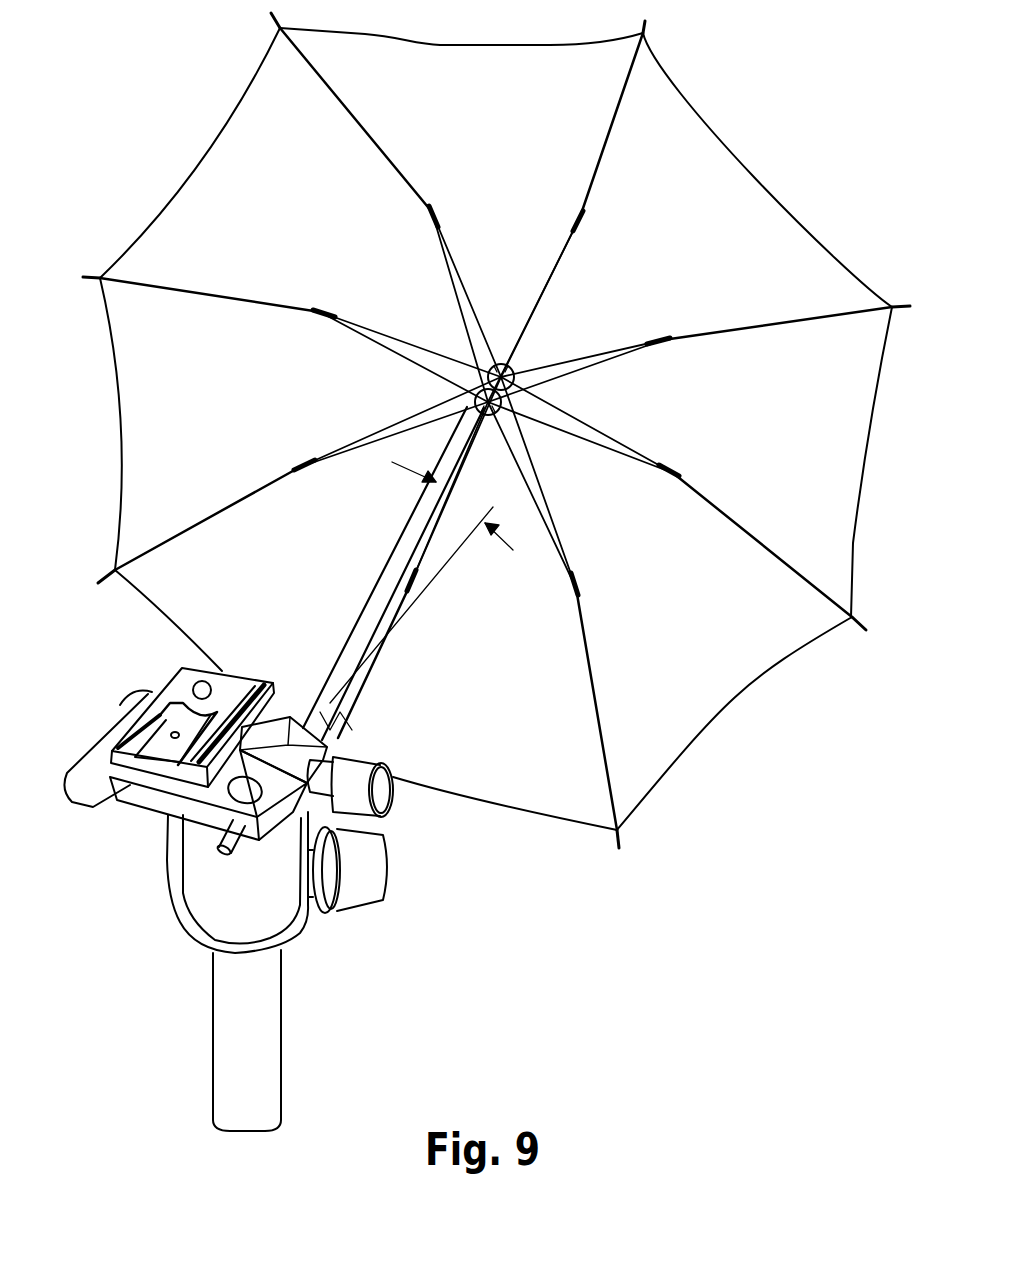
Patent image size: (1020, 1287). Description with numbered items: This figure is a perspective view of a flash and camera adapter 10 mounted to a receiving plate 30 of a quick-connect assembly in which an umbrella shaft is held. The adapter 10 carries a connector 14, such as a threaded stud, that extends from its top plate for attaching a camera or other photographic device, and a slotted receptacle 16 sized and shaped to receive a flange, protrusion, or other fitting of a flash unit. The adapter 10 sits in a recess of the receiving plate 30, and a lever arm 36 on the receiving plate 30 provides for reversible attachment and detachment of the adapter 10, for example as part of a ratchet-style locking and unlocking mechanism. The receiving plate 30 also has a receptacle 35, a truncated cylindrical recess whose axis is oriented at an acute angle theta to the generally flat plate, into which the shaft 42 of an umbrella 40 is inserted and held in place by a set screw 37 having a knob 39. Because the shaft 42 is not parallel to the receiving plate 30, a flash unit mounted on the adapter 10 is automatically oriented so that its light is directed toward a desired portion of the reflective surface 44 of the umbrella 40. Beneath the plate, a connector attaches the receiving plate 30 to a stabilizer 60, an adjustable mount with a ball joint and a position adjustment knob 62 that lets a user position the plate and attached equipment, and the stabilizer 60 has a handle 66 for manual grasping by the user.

The adapter 10 is at (160, 675).
The connector 14 is at (200, 684).
The receptacle 16 is at (160, 742).
The receiving plate 30 is at (132, 805).
The receptacle 35 is at (337, 724).
The lever arm 36 is at (75, 760).
The set screw 37 is at (327, 768).
The knob 39 is at (390, 795).
The umbrella 40 is at (496, 430).
The shaft 42 is at (398, 553).
The reflective surface 44 is at (672, 275).
The stabilizer 60 is at (167, 902).
The position adjustment knob 62 is at (373, 900).
The handle 66 is at (283, 1050).